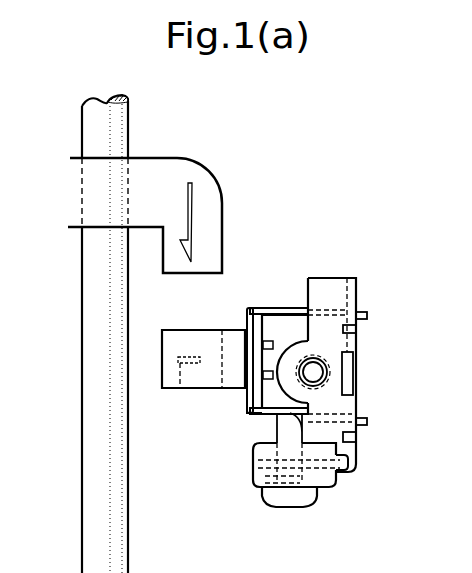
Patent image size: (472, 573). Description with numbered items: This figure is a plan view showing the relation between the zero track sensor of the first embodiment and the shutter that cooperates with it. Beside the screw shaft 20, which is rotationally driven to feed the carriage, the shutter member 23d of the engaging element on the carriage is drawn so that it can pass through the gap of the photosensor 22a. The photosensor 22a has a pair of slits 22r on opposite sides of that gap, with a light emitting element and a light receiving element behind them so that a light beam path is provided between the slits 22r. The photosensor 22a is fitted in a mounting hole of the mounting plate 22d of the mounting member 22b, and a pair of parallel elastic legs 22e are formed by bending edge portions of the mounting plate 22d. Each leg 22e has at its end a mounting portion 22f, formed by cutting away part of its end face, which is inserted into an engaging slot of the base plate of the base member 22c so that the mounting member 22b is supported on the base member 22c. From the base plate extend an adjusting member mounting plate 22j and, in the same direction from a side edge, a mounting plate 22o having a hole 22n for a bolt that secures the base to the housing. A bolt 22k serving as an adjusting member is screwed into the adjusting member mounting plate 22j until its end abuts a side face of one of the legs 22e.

The screw shaft 20 is at (80, 505).
The shutter member 23d is at (208, 263).
The photosensor 22a is at (207, 345).
The slits 22r is at (182, 390).
The mounting plate 22d is at (248, 306).
The legs 22e is at (291, 307).
The mounting member 22b is at (247, 402).
The base member 22c is at (357, 286).
The mounting plate 22o is at (335, 402).
The hole 22n is at (318, 371).
The mounting portion 22f is at (367, 315).
The adjusting member mounting plate 22j is at (342, 472).
The bolt 22k is at (298, 510).